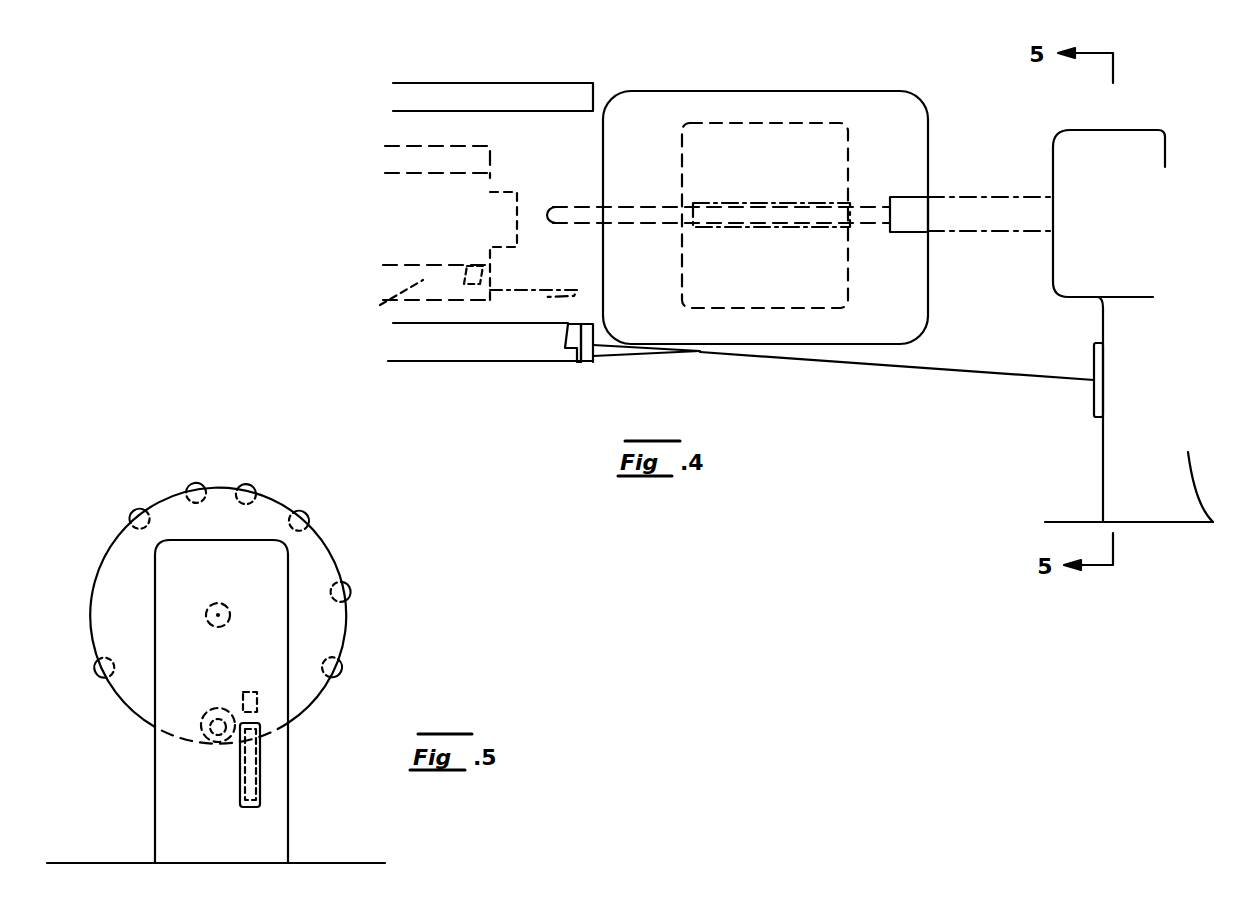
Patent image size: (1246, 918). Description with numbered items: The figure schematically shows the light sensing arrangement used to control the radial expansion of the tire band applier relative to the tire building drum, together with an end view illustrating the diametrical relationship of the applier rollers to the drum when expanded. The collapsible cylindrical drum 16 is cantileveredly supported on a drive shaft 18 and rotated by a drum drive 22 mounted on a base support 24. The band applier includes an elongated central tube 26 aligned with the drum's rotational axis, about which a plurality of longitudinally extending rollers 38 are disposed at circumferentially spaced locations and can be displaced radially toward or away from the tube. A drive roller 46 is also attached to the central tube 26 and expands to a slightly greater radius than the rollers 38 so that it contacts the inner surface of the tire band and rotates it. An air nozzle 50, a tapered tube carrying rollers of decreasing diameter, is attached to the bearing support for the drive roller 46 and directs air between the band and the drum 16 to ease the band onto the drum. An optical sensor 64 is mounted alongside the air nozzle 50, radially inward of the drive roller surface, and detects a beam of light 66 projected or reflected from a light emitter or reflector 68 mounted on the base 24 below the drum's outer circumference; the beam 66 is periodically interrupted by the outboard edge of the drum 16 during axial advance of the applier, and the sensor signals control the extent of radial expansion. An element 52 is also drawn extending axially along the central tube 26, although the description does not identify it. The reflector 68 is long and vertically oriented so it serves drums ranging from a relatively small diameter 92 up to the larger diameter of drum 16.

In FIG. 4, the collapsible cylindrical drum 16 is at (665, 90).
In FIG. 5, the collapsible cylindrical drum 16 is at (280, 507).
In FIG. 4, the drive shaft 18 is at (950, 193).
In FIG. 5, the drive shaft 18 is at (226, 603).
In FIG. 4, the drum drive 22 is at (1060, 142).
In FIG. 5, the drum drive 22 is at (167, 620).
In FIG. 4, the base support 24 is at (1115, 432).
In FIG. 5, the base support 24 is at (258, 823).
In FIG. 4, the central tube 26 is at (490, 207).
In FIG. 4, the rollers 38 is at (562, 83).
In FIG. 5, the rollers 38 is at (244, 489).
In FIG. 4, the drive roller 46 is at (432, 337).
In FIG. 5, the drive roller 46 is at (210, 708).
In FIG. 4, the air nozzle 50 is at (548, 285).
In FIG. 5, the air nozzle 50 is at (215, 738).
In FIG. 4, the shaft 52 is at (580, 205).
In FIG. 4, the optical sensor 64 is at (463, 266).
In FIG. 5, the optical sensor 64 is at (259, 702).
In FIG. 4, the beam of light 66 is at (830, 362).
In FIG. 4, the light emitter or reflector 68 is at (1092, 360).
In FIG. 5, the light emitter or reflector 68 is at (262, 740).
In FIG. 4, the drum with relatively small diameter 92 is at (688, 123).